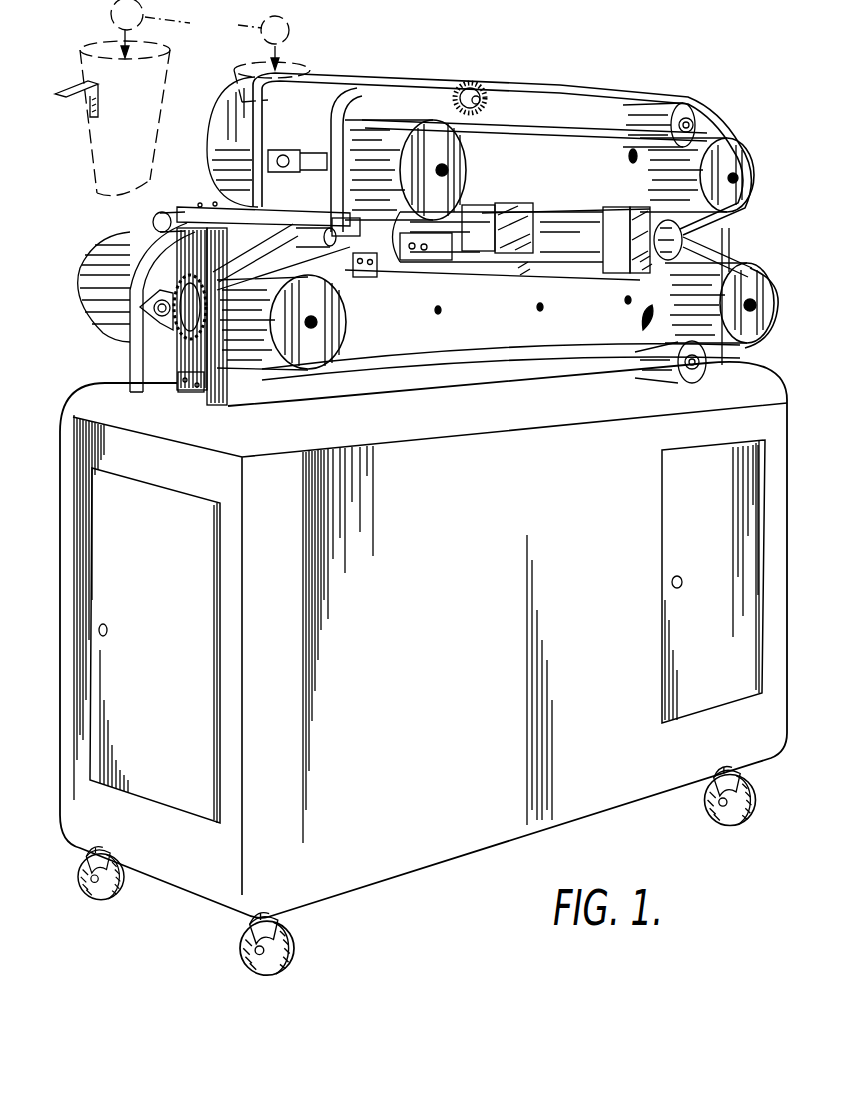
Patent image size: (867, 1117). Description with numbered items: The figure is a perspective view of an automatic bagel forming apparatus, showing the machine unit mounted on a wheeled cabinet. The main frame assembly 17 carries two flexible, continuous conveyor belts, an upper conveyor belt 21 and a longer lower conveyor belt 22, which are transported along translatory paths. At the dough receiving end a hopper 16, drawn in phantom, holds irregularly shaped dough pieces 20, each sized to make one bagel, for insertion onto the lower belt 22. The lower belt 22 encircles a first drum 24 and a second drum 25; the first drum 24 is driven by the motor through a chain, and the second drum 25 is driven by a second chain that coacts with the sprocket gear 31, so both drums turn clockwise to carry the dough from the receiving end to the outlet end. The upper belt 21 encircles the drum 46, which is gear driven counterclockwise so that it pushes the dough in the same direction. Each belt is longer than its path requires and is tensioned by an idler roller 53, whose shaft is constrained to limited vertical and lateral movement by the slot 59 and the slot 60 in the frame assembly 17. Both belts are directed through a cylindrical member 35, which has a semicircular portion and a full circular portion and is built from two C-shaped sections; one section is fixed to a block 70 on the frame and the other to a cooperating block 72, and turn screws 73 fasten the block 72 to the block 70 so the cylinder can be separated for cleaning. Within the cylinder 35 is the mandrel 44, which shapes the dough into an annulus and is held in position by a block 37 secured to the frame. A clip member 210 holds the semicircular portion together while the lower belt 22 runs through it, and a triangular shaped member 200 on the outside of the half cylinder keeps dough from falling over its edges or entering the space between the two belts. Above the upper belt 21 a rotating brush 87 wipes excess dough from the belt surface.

The hopper 16 is at (78, 47).
The dough piece 20 is at (203, 26).
The main frame assembly 17 is at (500, 88).
The brush 87 is at (488, 103).
The upper conveyor belt 21 is at (592, 133).
The idler roller 53 is at (656, 110).
The drum 46 is at (736, 152).
The block 70 is at (482, 213).
The cylindrical member 35 is at (552, 236).
The slot 59 is at (633, 160).
The first drum 24 is at (746, 283).
The mandrel 44 is at (298, 228).
The block 37 is at (178, 213).
The clip member 210 is at (368, 270).
The triangular shaped member 200 is at (427, 262).
The block 72 is at (500, 267).
The turn screw 73 is at (522, 278).
The slot 60 is at (648, 316).
The second drum 25 is at (332, 342).
The sprocket gear 31 is at (185, 322).
The lower conveyor belt 22 is at (453, 364).